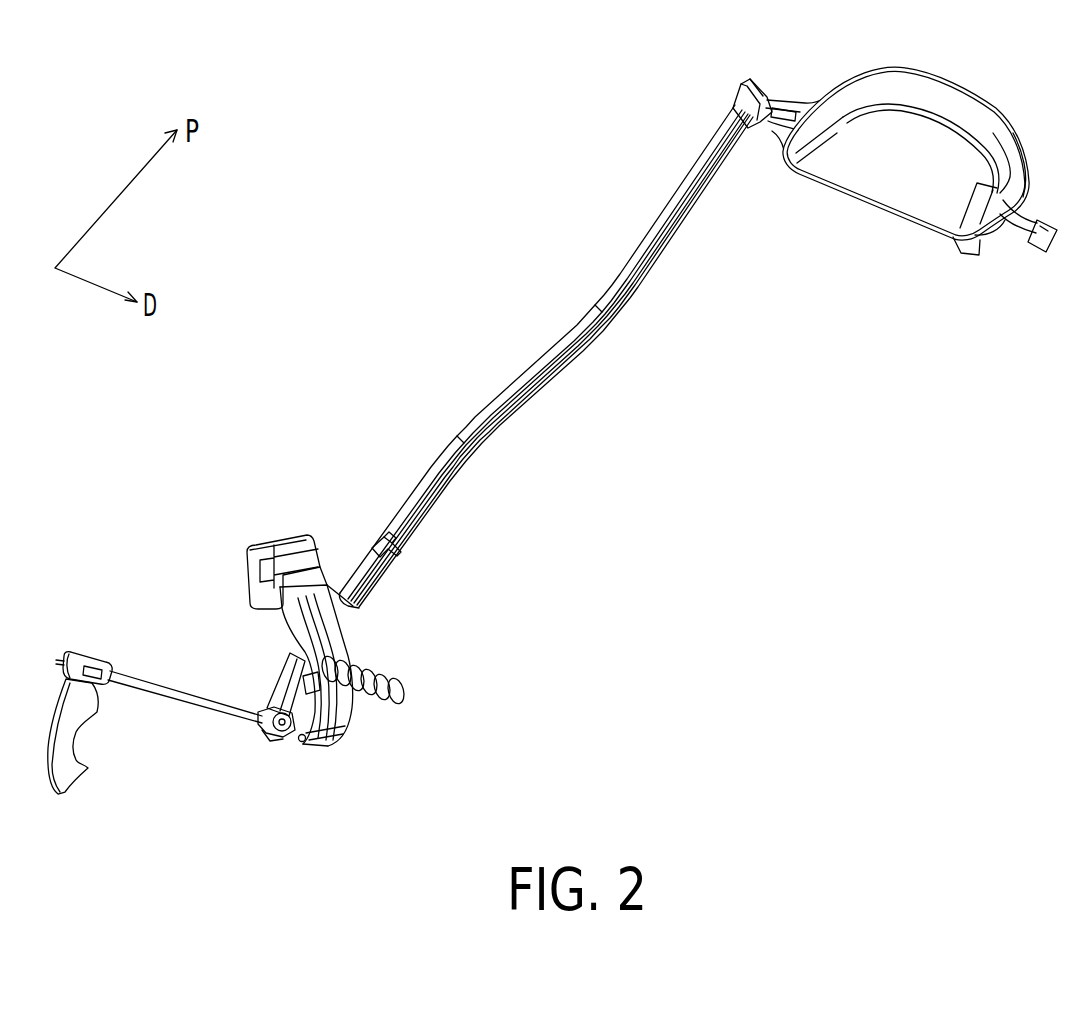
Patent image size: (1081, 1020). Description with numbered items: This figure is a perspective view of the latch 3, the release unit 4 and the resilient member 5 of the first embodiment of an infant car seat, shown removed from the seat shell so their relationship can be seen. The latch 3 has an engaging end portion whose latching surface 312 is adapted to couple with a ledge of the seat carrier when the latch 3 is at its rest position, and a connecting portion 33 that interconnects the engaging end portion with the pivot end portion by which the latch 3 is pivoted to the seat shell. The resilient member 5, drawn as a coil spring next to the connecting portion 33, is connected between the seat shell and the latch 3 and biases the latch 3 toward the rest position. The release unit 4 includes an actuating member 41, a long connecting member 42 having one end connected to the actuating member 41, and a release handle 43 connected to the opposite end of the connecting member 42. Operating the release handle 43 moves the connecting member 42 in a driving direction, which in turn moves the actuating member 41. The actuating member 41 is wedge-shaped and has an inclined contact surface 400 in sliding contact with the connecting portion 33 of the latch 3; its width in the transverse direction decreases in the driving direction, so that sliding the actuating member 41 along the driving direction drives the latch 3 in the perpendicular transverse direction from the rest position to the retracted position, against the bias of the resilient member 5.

The latch 3 is at (243, 533).
The latching surface 312 is at (282, 540).
The connecting portion 33 is at (303, 683).
The release unit 4 is at (530, 415).
The actuating member 41 is at (277, 698).
The connecting member 42 is at (656, 252).
The release handle 43 is at (824, 118).
The contact surface 400 is at (302, 688).
The resilient member 5 is at (404, 693).